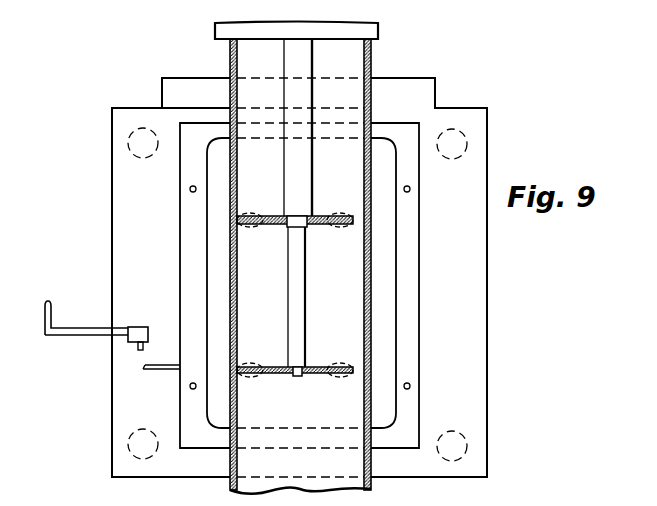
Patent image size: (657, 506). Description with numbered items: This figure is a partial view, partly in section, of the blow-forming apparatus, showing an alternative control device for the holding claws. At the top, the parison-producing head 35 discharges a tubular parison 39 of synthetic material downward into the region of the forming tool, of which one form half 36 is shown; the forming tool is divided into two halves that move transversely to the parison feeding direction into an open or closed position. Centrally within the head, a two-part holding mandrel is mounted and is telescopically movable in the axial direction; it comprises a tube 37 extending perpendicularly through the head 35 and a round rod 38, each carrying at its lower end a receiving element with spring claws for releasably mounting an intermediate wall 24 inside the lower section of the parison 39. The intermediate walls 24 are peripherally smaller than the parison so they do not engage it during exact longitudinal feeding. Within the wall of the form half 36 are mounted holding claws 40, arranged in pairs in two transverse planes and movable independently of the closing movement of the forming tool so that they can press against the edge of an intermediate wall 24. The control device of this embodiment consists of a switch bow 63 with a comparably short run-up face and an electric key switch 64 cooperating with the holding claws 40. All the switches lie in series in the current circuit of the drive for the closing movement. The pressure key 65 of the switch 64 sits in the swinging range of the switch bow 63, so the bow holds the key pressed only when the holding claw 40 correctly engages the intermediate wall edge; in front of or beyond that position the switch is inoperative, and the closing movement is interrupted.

The parison-producing head 35 is at (380, 30).
The parison 39 is at (372, 66).
The tube 37 is at (303, 103).
The form half 36 is at (112, 190).
The disc 24 is at (268, 228).
The round rod 38 is at (298, 323).
The holding claw 40 is at (345, 228).
The electric key switch 64 is at (131, 327).
The pressure key 65 is at (138, 352).
The switch bow 63 is at (142, 370).